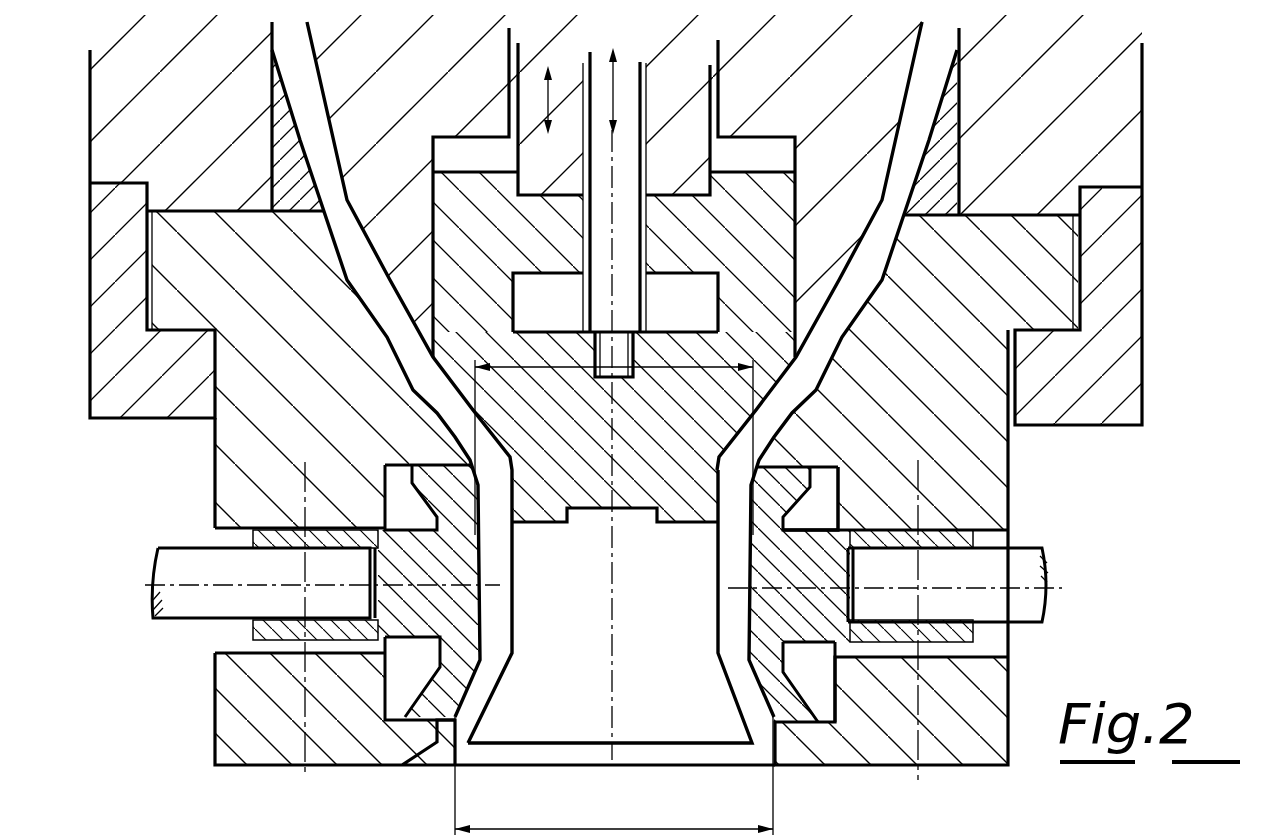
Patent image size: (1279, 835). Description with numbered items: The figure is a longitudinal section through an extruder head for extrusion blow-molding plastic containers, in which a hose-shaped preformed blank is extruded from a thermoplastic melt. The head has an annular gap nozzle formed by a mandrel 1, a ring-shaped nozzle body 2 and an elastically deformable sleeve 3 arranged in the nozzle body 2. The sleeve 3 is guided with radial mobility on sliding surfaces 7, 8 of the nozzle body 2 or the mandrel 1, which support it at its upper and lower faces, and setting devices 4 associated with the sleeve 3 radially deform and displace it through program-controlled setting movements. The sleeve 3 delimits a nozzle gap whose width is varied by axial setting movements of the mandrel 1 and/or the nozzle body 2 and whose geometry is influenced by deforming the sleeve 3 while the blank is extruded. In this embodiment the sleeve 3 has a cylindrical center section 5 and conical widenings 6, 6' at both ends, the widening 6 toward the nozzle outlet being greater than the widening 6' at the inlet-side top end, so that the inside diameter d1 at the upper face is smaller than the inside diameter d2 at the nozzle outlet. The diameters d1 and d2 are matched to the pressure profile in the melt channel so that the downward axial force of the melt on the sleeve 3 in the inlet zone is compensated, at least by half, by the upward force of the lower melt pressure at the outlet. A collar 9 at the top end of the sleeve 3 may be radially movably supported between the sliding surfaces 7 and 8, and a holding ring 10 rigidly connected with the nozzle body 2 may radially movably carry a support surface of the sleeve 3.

The mandrel 1 is at (555, 735).
The nozzle body 2 is at (263, 450).
The sleeve 3 is at (412, 613).
The setting devices 4 is at (170, 605).
The cylindrical center section 5 is at (753, 538).
The conical widening 6 is at (895, 636).
The conical widening 6' is at (310, 382).
The sliding surface 7 is at (800, 463).
The sliding surface 8 is at (798, 720).
The collar 9 is at (790, 493).
The holding ring 10 is at (993, 678).
The inside diameter of the sleeve at the top end d1 is at (542, 367).
The inside diameter of the sleeve at the nozzle outlet d2 is at (633, 829).